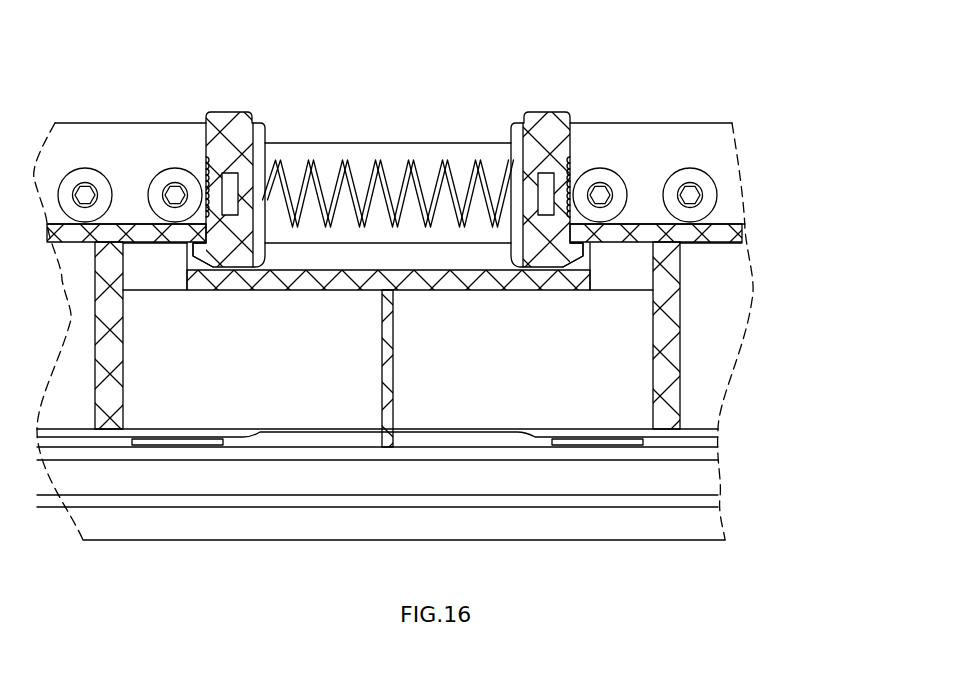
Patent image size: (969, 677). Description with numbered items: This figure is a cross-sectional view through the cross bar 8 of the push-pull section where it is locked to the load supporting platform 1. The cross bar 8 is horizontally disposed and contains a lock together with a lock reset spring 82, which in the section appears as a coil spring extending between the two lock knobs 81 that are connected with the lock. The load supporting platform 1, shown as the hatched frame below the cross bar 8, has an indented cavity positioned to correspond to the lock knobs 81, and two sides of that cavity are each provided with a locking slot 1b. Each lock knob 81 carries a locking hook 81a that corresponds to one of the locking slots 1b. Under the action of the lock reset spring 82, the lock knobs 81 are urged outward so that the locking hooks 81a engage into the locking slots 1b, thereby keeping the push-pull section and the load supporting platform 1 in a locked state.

The load supporting platform 1 is at (453, 327).
The locking slot 1b is at (583, 265).
The cross bar 8 is at (444, 133).
The lock knob 81 is at (538, 137).
The locking hook 81a is at (586, 256).
The lock reset spring 82 is at (348, 160).